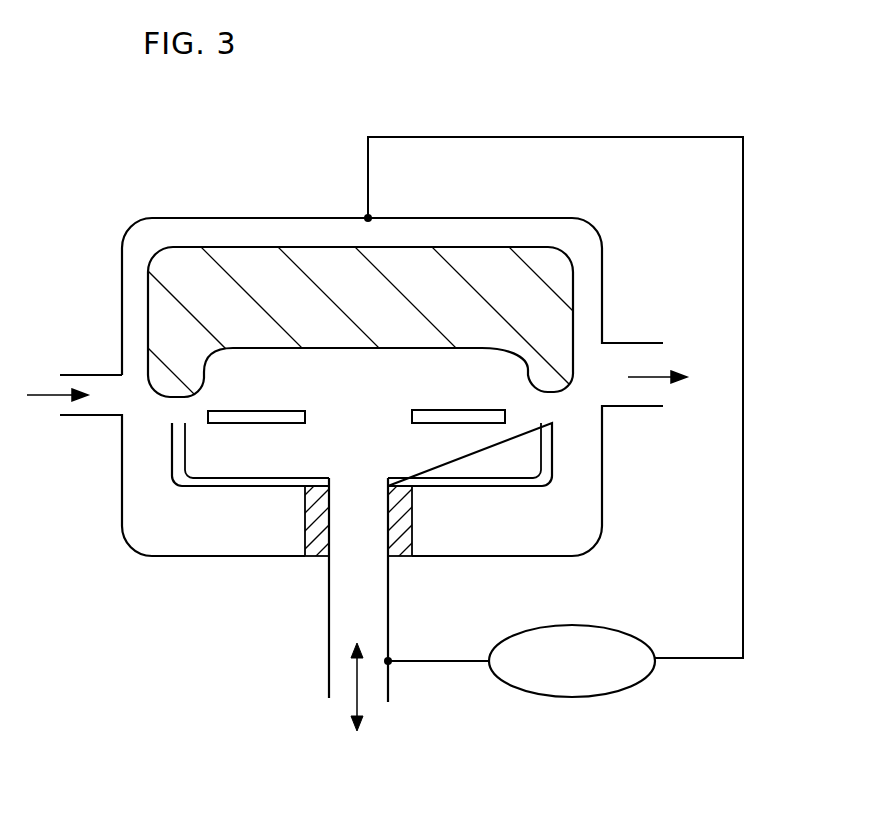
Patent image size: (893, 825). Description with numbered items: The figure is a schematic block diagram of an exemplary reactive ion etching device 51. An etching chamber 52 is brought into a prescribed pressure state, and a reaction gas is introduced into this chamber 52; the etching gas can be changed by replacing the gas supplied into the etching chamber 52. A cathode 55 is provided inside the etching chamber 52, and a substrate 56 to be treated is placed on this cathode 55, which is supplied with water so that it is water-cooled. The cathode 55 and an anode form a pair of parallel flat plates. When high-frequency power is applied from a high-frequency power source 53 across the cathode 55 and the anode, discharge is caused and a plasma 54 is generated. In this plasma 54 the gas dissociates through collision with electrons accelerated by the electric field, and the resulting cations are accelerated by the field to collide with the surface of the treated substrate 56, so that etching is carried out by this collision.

The reactive ion etching device 51 is at (385, 392).
The etching chamber 52 is at (596, 248).
The high-frequency power source 53 is at (622, 692).
The plasma 54 is at (535, 252).
The cathode 55 is at (353, 422).
The substrate 56 is at (457, 411).